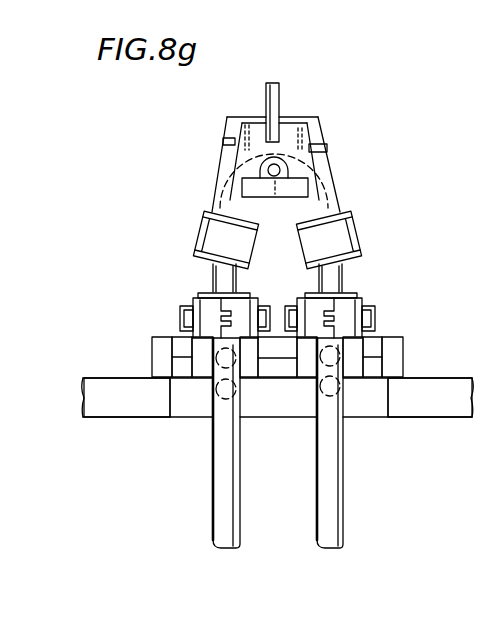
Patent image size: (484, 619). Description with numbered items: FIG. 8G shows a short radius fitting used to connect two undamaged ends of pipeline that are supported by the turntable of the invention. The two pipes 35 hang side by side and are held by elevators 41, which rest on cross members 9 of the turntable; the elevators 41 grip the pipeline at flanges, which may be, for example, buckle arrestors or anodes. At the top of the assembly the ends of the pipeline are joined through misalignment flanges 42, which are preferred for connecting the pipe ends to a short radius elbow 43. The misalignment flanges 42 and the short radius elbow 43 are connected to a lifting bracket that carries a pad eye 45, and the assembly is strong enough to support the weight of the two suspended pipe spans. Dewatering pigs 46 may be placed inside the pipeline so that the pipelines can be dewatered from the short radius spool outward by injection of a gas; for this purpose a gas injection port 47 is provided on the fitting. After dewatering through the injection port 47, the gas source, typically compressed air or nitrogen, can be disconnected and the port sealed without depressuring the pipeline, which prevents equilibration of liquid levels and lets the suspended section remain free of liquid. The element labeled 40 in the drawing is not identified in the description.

The cross members 9 is at (192, 338).
The pipes 35 is at (319, 500).
The holder blocks 40 is at (195, 298).
The elevators 41 is at (211, 292).
The misalignment flanges 42 is at (206, 211).
The short radius elbow 43 is at (322, 141).
The pad eye 45 is at (272, 83).
The dewatering pigs 46 is at (346, 395).
The gas injection port 47 is at (281, 157).